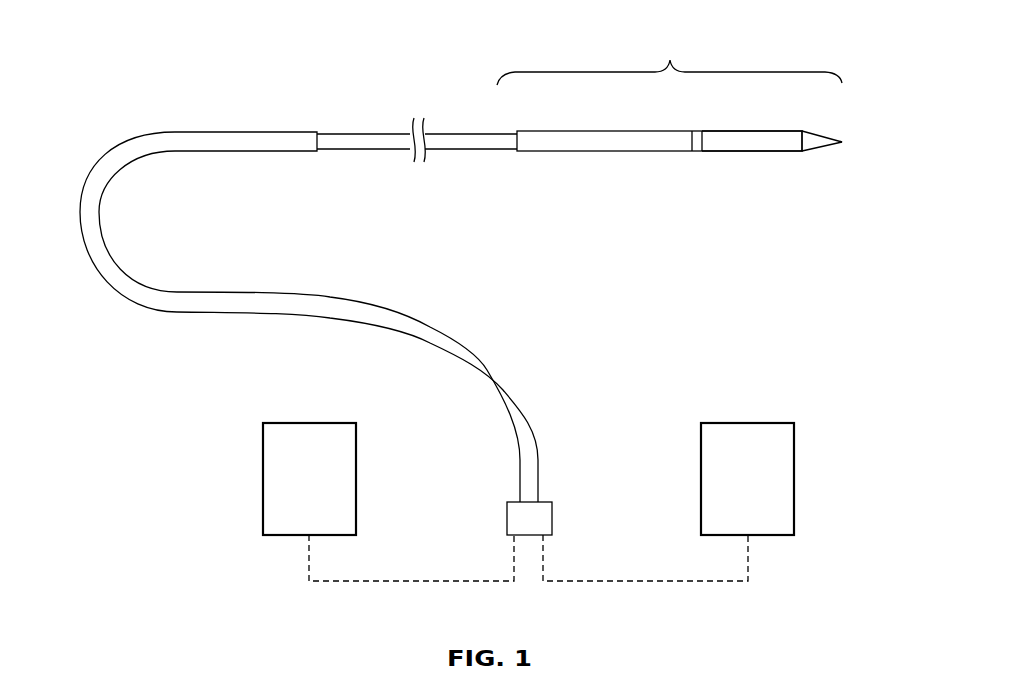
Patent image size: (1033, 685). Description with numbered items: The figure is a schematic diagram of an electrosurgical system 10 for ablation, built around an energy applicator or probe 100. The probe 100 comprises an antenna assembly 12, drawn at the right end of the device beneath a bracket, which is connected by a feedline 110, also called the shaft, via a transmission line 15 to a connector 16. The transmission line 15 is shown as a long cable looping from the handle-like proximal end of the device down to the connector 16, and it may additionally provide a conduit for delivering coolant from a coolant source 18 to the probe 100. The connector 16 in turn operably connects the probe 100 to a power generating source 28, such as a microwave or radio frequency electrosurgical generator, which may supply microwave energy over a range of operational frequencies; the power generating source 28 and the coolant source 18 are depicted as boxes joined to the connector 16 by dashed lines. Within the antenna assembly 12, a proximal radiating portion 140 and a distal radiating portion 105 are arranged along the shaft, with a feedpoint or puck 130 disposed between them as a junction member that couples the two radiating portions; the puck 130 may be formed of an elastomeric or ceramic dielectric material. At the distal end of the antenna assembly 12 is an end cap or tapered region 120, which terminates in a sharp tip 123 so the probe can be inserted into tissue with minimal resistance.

The electrosurgical system 10 is at (195, 41).
The antenna assembly 12 is at (669, 59).
The transmission line 15 is at (248, 132).
The connector 16 is at (515, 502).
The coolant source 18 is at (748, 423).
The power generating source 28 is at (309, 423).
The energy applicator 100 is at (553, 279).
The distal radiating portion 105 is at (715, 175).
The feedline 110 is at (468, 133).
The tapered region 120 is at (820, 133).
The sharp tip 123 is at (843, 143).
The puck 130 is at (696, 131).
The proximal radiating portion 140 is at (583, 175).